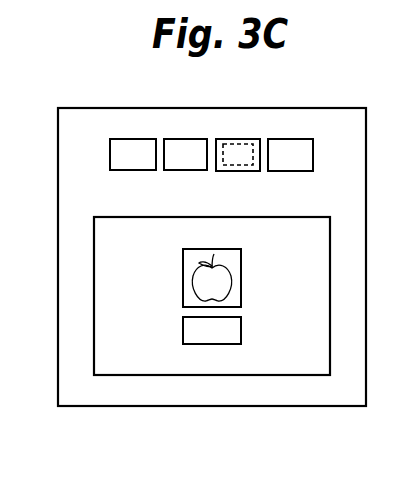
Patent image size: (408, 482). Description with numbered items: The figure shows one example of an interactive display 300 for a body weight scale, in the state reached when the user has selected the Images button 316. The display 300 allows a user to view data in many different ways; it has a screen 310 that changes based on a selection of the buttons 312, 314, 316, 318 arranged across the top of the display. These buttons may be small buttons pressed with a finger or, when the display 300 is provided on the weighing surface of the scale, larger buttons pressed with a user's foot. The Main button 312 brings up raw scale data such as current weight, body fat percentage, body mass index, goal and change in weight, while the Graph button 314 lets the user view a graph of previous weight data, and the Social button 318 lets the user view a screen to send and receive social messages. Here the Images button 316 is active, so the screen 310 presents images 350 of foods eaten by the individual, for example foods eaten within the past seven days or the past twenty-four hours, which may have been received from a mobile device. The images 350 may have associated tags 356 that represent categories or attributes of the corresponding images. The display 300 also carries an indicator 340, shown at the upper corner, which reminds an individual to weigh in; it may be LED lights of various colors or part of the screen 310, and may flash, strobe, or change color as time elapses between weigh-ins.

The interactive display 300 is at (333, 406).
The screen 310 is at (104, 217).
The Main button 312 is at (145, 139).
The Graph button 314 is at (195, 139).
The Images button 316 is at (245, 139).
The Social button 318 is at (274, 139).
The indicator 340 is at (88, 108).
The images 350 is at (183, 270).
The tags 356 is at (183, 326).